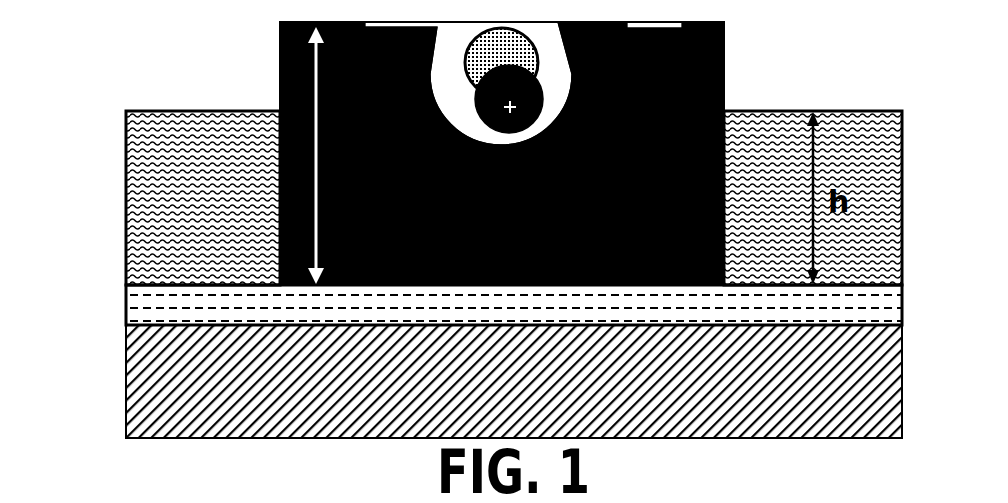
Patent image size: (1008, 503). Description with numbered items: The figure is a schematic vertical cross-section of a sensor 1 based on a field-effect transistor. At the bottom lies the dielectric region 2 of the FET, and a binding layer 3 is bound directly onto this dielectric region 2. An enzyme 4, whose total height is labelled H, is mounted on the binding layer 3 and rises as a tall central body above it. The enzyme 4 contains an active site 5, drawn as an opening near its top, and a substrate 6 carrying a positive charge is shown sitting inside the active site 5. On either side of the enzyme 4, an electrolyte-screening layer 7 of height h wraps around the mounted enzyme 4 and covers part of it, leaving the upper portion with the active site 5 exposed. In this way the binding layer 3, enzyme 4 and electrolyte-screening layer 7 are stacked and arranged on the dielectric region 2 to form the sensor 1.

The sensor 1 is at (168, 59).
The dielectric region 2 is at (148, 394).
The binding layer 3 is at (160, 310).
The enzyme 4 is at (514, 214).
The active site 5 is at (555, 60).
The substrate 6 is at (485, 35).
The electrolyte-screening layer 7 is at (163, 239).